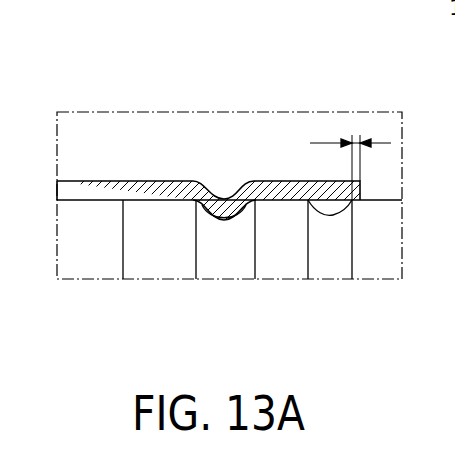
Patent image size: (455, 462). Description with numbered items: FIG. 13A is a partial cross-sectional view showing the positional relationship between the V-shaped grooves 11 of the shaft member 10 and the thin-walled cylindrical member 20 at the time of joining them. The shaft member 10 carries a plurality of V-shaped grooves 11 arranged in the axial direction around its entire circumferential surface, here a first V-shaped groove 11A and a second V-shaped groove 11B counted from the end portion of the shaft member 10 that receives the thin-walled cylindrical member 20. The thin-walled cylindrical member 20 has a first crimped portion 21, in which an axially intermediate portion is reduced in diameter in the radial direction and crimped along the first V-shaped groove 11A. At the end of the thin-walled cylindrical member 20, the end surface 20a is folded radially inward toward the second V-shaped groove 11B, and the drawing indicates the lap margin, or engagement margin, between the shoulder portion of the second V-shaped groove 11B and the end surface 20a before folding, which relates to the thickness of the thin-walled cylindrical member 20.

The shaft member 10 is at (378, 222).
The V-shaped grooves 11 is at (321, 64).
The first V-shaped groove 11A is at (238, 207).
The second V-shaped groove 11B is at (327, 212).
The thin-walled cylindrical member 20 is at (107, 188).
The end surface 20a is at (361, 190).
The first crimped portion 21 is at (223, 185).